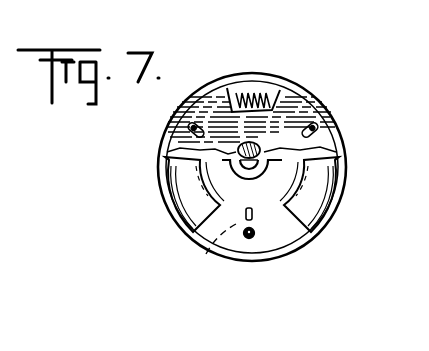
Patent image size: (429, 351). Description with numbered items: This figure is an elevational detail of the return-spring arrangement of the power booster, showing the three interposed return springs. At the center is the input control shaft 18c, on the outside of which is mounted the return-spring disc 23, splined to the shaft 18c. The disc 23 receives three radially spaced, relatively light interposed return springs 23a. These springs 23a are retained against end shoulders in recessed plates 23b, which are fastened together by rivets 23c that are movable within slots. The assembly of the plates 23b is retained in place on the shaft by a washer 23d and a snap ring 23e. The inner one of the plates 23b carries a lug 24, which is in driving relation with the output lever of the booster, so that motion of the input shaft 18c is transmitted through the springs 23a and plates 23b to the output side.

The return-spring disc 23 is at (210, 110).
The return springs 23a is at (245, 88).
The recessed plates 23b is at (292, 237).
The rivets 23c is at (185, 130).
The washer 23d is at (270, 167).
The snap ring 23e is at (272, 168).
The input control shaft 18c is at (258, 160).
The lug 24 is at (211, 252).